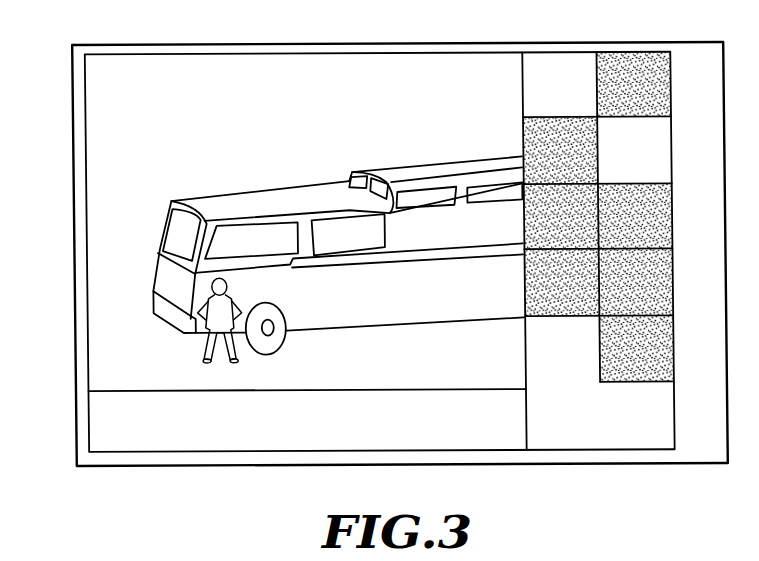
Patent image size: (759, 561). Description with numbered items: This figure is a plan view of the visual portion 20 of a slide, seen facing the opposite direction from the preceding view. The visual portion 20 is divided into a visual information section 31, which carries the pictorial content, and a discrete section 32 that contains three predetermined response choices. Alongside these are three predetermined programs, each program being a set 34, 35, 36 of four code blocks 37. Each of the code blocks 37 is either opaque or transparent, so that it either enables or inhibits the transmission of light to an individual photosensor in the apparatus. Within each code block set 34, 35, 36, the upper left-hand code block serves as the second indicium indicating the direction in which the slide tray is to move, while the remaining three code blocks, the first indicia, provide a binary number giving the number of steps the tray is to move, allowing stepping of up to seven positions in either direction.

The visual portion 20 is at (62, 231).
The visual information section 31 is at (107, 330).
The discrete section 32 is at (103, 424).
The code block set 34 is at (678, 52).
The code block set 35 is at (678, 185).
The code block set 36 is at (679, 318).
The code blocks 37 is at (572, 70).